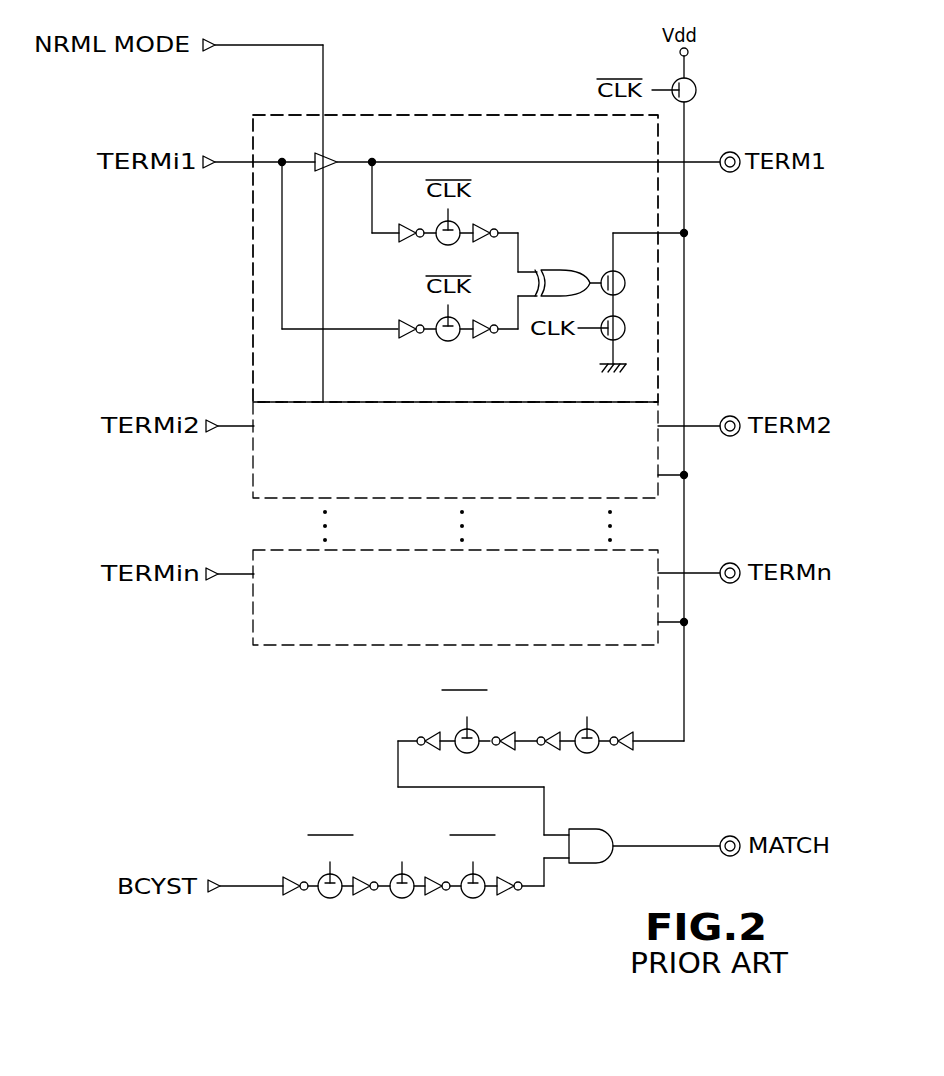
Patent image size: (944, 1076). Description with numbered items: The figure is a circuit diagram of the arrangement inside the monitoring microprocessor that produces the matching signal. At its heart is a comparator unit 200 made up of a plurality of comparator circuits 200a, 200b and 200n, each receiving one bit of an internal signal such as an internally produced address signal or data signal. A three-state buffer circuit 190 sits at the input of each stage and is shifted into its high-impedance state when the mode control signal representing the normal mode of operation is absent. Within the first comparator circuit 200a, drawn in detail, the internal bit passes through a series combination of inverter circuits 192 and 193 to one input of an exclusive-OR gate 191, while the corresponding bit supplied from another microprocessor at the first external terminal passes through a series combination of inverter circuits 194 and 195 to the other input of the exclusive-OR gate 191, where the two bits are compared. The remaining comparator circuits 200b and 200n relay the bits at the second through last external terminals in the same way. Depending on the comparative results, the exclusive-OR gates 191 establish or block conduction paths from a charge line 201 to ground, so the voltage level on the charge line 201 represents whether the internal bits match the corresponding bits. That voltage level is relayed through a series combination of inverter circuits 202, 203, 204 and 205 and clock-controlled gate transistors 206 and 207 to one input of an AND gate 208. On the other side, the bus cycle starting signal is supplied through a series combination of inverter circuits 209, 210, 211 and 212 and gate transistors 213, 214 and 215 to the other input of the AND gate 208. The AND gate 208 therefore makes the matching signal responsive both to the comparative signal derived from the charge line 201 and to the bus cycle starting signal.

The three-state buffer circuit 190 is at (336, 159).
The exclusive-OR gate 191 is at (565, 268).
The inverter circuit 192 is at (405, 340).
The inverter circuit 193 is at (485, 340).
The inverter circuit 194 is at (404, 244).
The inverter circuit 195 is at (492, 228).
The comparator unit 200 is at (453, 115).
The comparator circuit 200a is at (253, 290).
The comparator circuit 200b is at (255, 468).
The comparator circuit 200n is at (256, 622).
The charge line 201 is at (686, 288).
The inverter circuit 202 is at (632, 733).
The inverter circuit 203 is at (551, 751).
The inverter circuit 204 is at (506, 733).
The inverter circuit 205 is at (431, 734).
The gate transistor 206 is at (597, 752).
The gate transistor 207 is at (466, 754).
The AND gate 208 is at (608, 832).
The inverter circuit 209 is at (288, 897).
The inverter circuit 210 is at (360, 897).
The inverter circuit 211 is at (431, 897).
The inverter circuit 212 is at (506, 897).
The gate transistor 213 is at (326, 900).
The gate transistor 214 is at (398, 900).
The gate transistor 215 is at (473, 900).